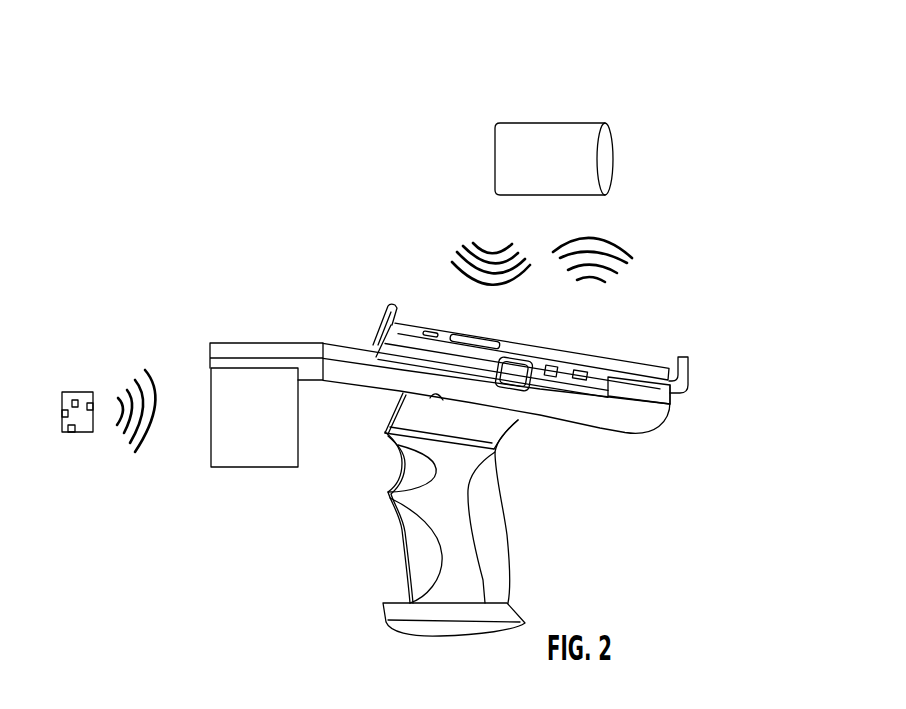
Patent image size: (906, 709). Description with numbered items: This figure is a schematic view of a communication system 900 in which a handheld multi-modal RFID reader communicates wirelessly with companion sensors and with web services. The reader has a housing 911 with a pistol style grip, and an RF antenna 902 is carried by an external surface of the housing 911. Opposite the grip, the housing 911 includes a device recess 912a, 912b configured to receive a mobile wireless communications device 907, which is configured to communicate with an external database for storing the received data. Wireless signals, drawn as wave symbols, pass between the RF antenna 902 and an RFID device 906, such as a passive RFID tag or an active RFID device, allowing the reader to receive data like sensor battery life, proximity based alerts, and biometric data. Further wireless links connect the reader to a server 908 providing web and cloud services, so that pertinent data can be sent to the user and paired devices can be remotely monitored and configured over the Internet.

The communication system 900 is at (725, 118).
The RF antenna 902 is at (210, 420).
The RFID device 906 is at (82, 433).
The mobile wireless communications device 907 is at (626, 361).
The server 908 is at (618, 167).
The housing 911 is at (497, 543).
The device recess 912a is at (392, 305).
The device recess 912b is at (689, 378).